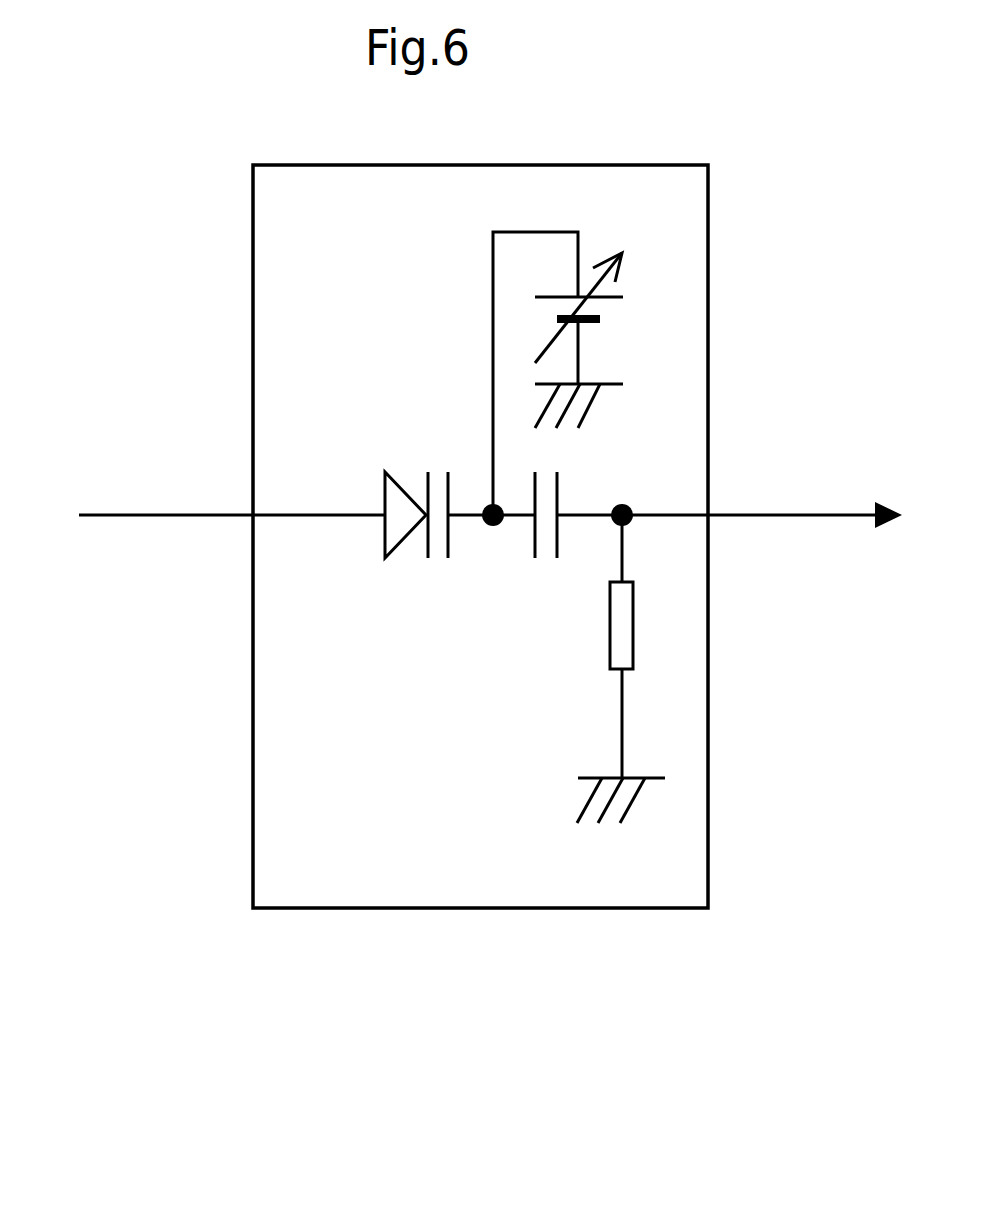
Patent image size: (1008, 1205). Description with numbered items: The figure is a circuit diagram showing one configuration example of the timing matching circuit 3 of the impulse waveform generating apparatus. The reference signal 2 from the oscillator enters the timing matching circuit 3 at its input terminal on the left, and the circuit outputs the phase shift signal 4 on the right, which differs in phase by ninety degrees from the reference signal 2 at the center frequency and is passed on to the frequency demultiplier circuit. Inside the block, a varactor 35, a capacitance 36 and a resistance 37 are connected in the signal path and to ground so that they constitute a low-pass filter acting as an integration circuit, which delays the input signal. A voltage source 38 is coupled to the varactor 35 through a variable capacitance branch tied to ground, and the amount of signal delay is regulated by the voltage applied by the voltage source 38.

The reference signal 2 is at (210, 517).
The timing matching circuit 3 is at (535, 910).
The phase shift signal 4 is at (838, 517).
The varactor 35 is at (384, 547).
The capacitance 36 is at (533, 540).
The resistance 37 is at (600, 670).
The voltage source 38 is at (622, 319).